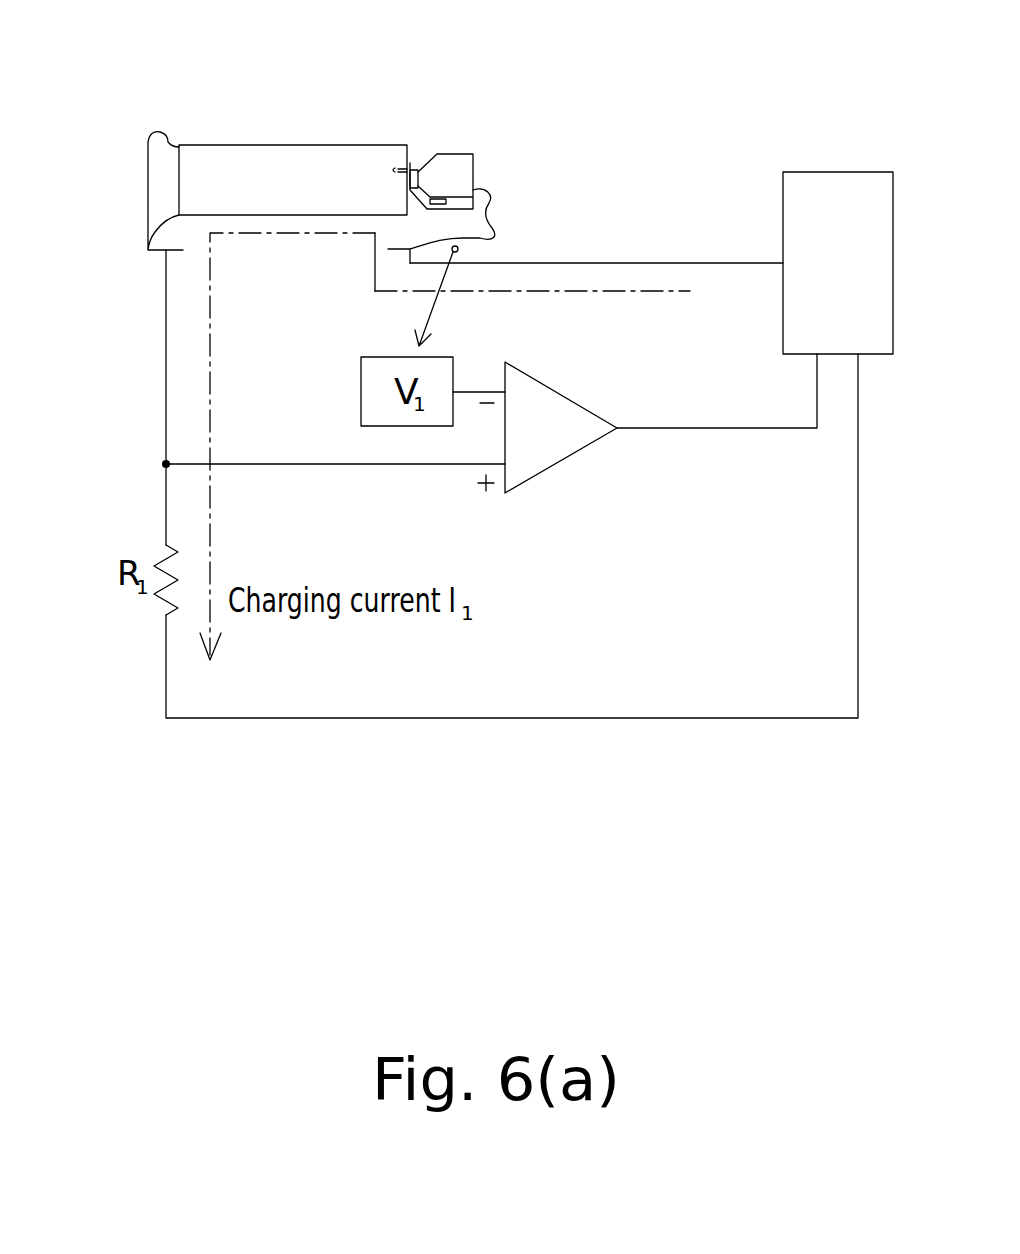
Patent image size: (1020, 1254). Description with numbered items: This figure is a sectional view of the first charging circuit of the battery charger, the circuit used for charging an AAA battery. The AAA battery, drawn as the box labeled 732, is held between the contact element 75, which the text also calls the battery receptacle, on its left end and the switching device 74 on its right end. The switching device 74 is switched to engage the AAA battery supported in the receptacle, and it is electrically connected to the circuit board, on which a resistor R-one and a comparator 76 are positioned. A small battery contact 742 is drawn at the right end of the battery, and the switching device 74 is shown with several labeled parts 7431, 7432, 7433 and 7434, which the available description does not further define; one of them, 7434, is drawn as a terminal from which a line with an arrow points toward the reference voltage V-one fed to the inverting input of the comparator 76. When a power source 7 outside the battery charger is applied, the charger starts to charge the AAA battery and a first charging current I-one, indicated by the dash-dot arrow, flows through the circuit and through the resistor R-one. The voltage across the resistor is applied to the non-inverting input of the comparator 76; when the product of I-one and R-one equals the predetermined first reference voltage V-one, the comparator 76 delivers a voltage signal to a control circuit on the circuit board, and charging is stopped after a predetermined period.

The power source 7 is at (834, 222).
The switching device 74 is at (447, 199).
The contact element 75 is at (158, 180).
The comparator 76 is at (556, 435).
The battery 732 is at (289, 162).
The battery contact 742 is at (397, 167).
The contact plate 7431 is at (418, 172).
The contact terminal 7432 is at (474, 192).
The spring latch 7433 is at (388, 250).
The sensing terminal 7434 is at (458, 252).